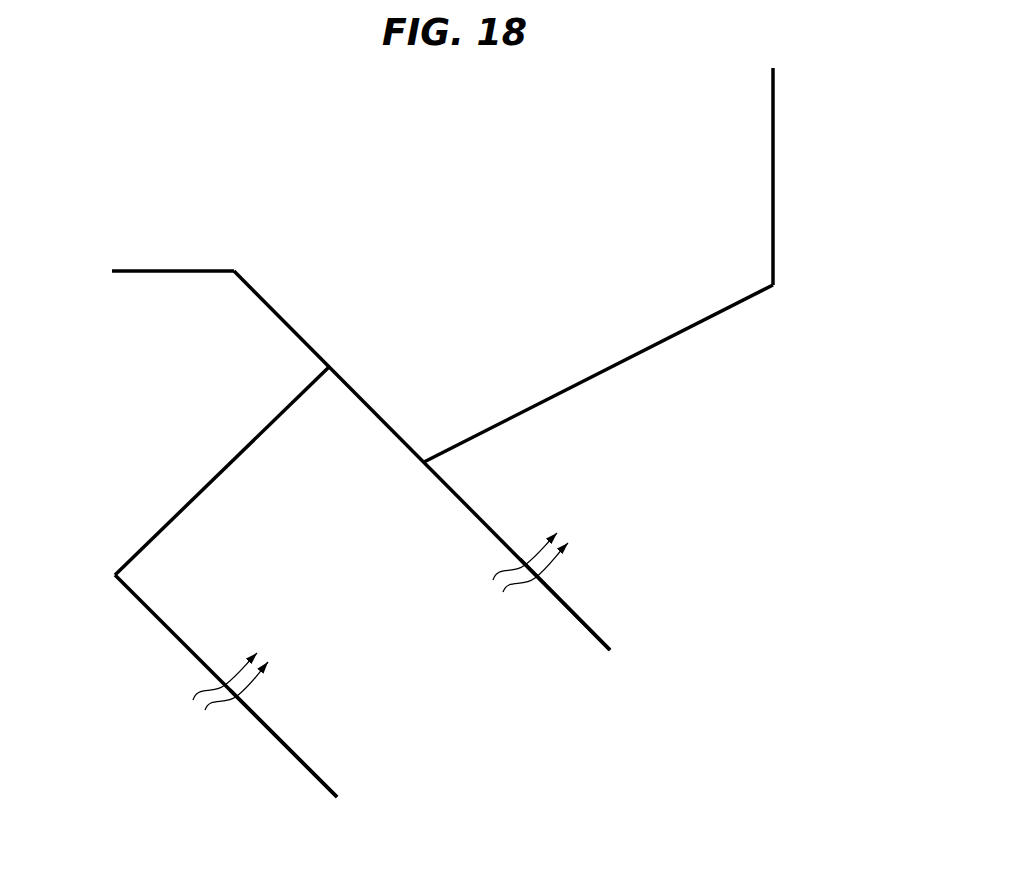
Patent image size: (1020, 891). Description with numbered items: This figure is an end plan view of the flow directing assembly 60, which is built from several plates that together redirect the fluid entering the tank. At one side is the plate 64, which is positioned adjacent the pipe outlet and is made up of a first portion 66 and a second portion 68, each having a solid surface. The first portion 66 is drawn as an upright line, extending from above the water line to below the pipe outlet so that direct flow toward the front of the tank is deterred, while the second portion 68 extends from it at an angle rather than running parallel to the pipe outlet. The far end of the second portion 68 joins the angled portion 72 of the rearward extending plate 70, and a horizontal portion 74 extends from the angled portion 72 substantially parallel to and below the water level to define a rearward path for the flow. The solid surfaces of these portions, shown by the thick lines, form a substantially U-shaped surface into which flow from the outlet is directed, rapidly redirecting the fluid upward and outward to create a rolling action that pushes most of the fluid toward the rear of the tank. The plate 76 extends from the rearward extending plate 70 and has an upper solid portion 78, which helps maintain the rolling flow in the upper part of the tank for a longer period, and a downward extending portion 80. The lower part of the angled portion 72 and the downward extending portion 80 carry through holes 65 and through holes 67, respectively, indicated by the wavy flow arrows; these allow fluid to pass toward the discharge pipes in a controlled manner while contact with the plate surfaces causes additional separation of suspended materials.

The flow directing assembly 60 is at (478, 187).
The plate 64 is at (793, 277).
The first portion 66 is at (773, 158).
The second portion 68 is at (613, 367).
The rearward extending plate 70 is at (333, 328).
The angled portion 72 is at (468, 507).
The horizontal portion 74 is at (170, 271).
The plate 76 is at (125, 522).
The upper solid portion 78 is at (230, 465).
The downward extending portion 80 is at (168, 632).
The through holes 65 is at (578, 613).
The through holes 67 is at (285, 742).